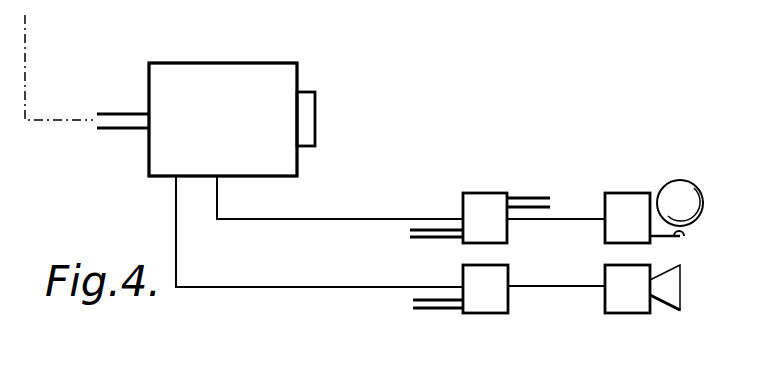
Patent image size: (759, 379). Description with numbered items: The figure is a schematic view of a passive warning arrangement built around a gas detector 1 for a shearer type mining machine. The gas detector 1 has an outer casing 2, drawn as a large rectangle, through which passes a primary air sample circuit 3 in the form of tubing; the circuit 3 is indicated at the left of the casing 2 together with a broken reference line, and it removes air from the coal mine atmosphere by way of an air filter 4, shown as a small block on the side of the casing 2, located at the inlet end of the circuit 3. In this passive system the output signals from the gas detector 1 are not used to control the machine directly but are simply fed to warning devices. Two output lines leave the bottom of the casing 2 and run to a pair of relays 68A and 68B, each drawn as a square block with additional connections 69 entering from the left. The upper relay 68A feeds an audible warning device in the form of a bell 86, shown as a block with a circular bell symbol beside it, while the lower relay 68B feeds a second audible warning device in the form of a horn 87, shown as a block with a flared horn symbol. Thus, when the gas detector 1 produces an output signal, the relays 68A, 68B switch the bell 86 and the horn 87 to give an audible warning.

The gas detector 1 is at (235, 63).
The outer casing 2 is at (283, 80).
The primary air sample circuit 3 is at (108, 113).
The air filter 4 is at (311, 115).
The relay 68A is at (480, 202).
The relay 68B is at (492, 303).
The supply lines 69 is at (421, 243).
The bell 86 is at (673, 193).
The horn 87 is at (670, 295).